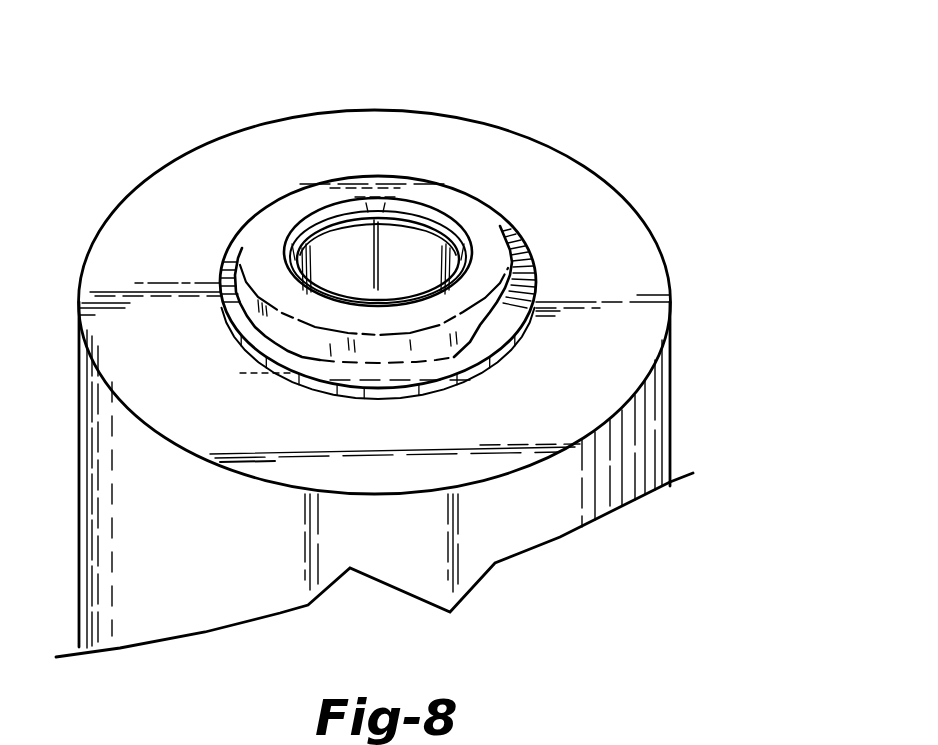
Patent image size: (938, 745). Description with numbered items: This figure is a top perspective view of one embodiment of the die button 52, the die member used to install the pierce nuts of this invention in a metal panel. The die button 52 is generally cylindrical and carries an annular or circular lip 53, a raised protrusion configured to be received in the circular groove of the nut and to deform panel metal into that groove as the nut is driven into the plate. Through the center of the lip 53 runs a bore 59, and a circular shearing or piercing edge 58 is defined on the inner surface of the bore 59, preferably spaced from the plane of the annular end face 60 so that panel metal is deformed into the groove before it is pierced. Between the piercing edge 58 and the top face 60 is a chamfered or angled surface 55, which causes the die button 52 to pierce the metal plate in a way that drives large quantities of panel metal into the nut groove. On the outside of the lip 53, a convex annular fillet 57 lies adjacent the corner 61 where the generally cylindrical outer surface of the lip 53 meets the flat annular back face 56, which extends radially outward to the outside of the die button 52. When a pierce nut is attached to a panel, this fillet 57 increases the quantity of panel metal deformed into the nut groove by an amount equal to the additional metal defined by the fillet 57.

The die button 52 is at (727, 272).
The annular lip 53 is at (242, 247).
The chamfered surface 55 is at (422, 211).
The annular back face 56 is at (188, 232).
The convex annular fillet 57 is at (460, 327).
The piercing edge 58 is at (447, 228).
The bore 59 is at (424, 274).
The annular end face 60 is at (328, 192).
The corner 61 is at (297, 323).